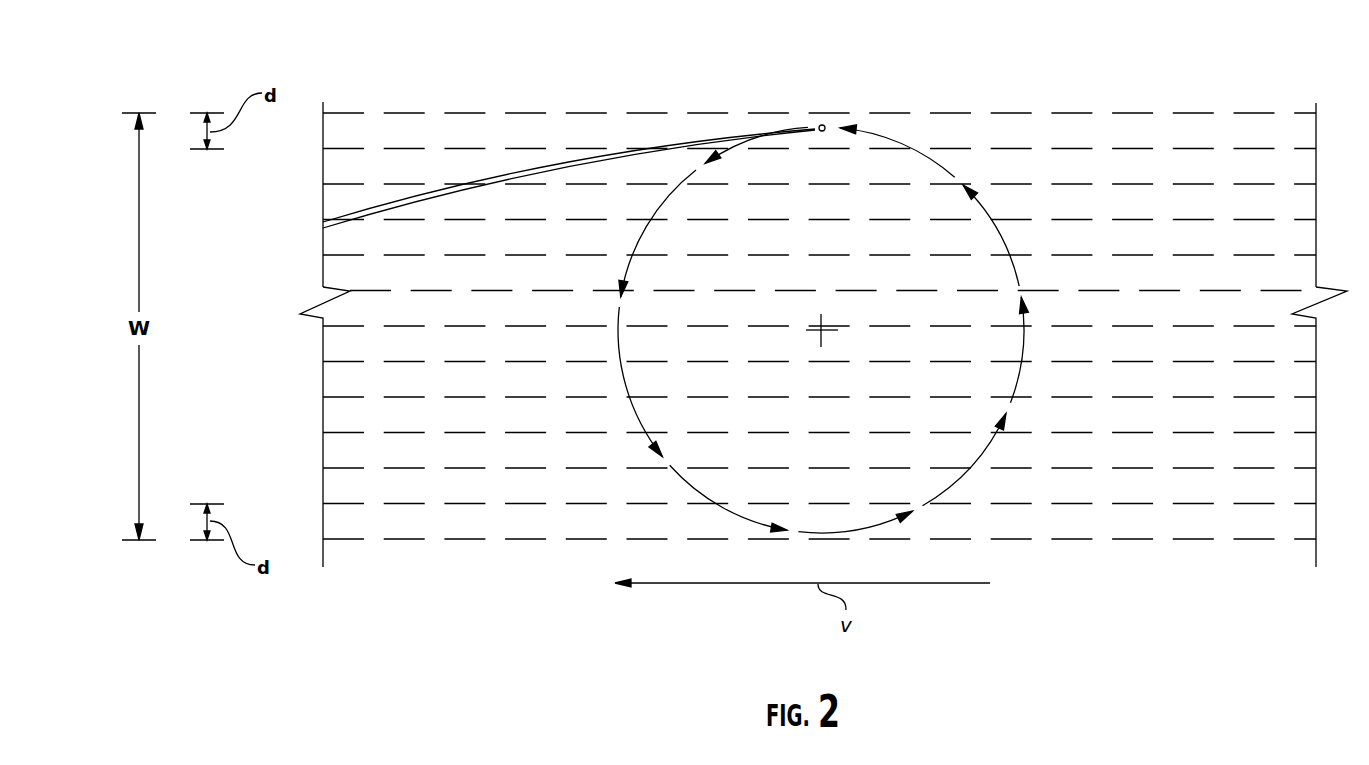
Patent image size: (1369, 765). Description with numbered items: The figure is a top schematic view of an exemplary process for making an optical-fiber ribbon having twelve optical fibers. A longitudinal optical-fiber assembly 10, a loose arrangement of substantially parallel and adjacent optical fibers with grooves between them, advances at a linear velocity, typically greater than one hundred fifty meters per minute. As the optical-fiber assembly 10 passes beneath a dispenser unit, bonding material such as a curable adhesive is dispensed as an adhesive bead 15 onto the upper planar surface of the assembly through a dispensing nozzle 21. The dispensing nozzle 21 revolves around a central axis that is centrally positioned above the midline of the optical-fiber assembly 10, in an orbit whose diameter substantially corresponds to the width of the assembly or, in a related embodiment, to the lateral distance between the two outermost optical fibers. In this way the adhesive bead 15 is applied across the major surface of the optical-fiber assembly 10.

The longitudinal optical-fiber assembly 10 is at (1118, 168).
The adhesive bead 15 is at (530, 170).
The dispensing nozzle 21 is at (822, 124).